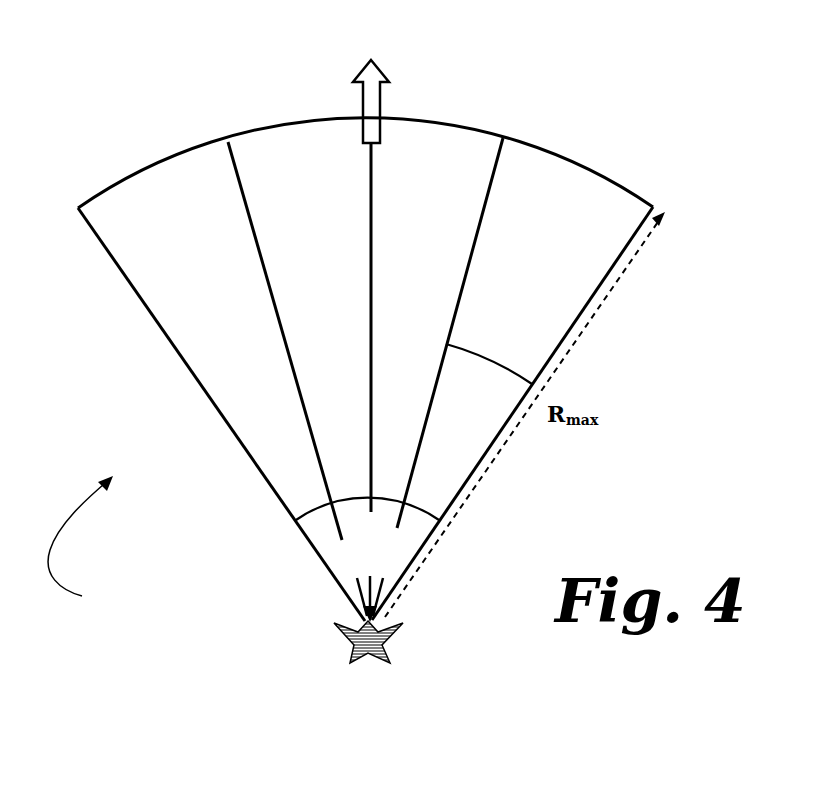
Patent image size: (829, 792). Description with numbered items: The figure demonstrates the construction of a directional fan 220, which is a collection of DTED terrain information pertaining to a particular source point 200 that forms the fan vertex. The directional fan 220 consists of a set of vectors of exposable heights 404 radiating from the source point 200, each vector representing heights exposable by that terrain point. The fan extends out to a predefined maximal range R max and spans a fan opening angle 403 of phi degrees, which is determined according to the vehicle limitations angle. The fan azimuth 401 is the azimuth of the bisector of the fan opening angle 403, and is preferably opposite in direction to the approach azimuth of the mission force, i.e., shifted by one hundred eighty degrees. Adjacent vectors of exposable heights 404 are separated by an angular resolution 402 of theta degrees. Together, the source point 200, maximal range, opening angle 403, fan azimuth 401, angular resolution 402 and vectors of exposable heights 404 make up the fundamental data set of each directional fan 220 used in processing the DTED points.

The source point 200 is at (350, 630).
The directional fan 220 is at (94, 559).
The fan azimuth 401 is at (382, 103).
The angular resolution 402 is at (487, 342).
The fan opening angle 403 is at (422, 510).
The vectors of exposable heights 404 is at (118, 272).